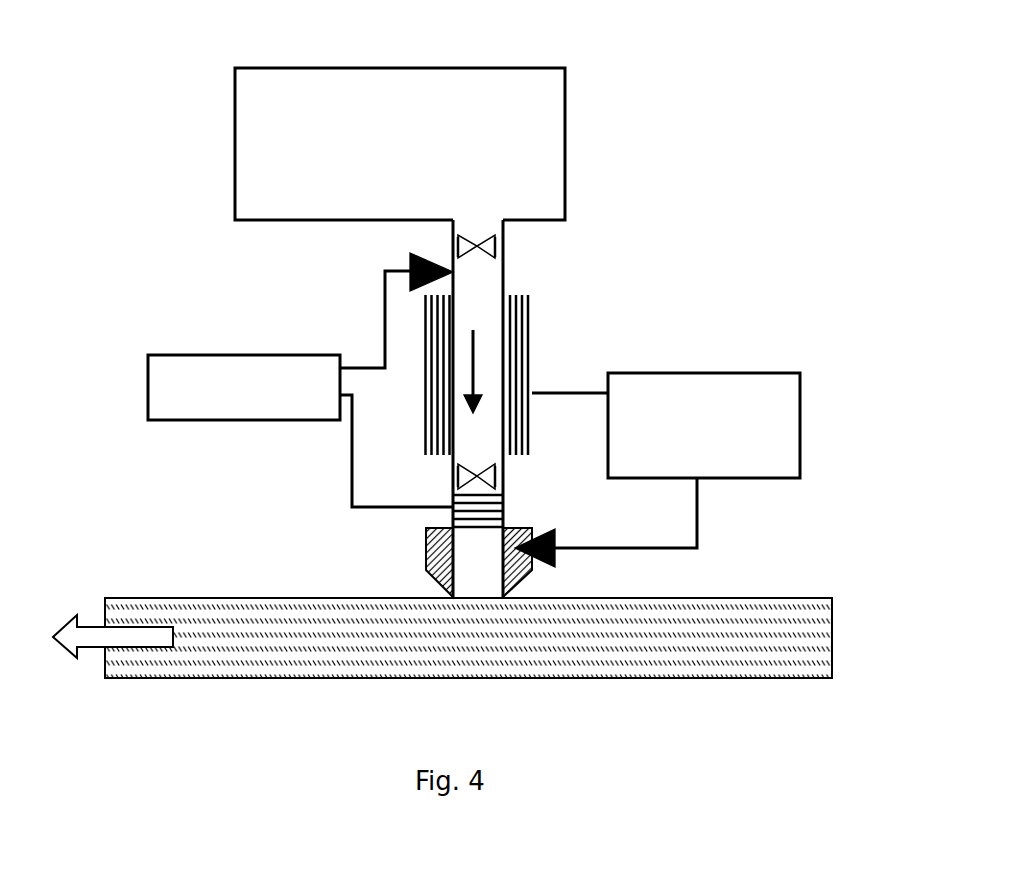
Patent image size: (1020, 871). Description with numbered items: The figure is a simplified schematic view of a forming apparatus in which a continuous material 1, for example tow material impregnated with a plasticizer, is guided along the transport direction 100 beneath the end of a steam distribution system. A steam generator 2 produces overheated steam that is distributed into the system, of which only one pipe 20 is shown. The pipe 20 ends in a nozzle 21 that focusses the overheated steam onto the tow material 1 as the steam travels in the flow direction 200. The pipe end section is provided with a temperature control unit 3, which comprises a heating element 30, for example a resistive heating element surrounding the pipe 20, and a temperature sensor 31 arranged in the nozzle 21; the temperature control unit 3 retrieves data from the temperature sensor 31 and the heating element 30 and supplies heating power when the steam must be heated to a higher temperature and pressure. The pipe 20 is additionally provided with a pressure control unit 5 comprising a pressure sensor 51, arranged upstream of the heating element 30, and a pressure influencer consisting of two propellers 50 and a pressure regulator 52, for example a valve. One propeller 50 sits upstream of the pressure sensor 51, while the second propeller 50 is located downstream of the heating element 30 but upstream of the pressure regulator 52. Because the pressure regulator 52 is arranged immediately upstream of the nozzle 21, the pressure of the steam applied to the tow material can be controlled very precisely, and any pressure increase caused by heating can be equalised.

The continuous material 1 is at (220, 647).
The transport direction 100 is at (90, 633).
The steam generator 2 is at (527, 85).
The pipe 20 is at (503, 280).
The heating element 30 is at (518, 306).
The propeller 50 is at (495, 243).
The pressure sensor 51 is at (453, 273).
The pressure control unit 5 is at (170, 383).
The temperature control unit 3 is at (720, 397).
The flow direction 200 is at (472, 377).
The pressure regulator 52 is at (470, 502).
The nozzle 21 is at (428, 547).
The temperature sensor 31 is at (552, 568).